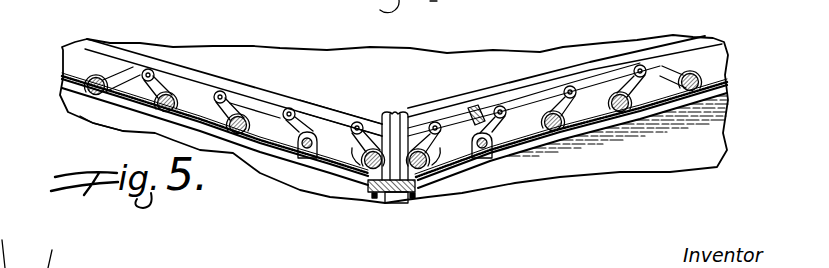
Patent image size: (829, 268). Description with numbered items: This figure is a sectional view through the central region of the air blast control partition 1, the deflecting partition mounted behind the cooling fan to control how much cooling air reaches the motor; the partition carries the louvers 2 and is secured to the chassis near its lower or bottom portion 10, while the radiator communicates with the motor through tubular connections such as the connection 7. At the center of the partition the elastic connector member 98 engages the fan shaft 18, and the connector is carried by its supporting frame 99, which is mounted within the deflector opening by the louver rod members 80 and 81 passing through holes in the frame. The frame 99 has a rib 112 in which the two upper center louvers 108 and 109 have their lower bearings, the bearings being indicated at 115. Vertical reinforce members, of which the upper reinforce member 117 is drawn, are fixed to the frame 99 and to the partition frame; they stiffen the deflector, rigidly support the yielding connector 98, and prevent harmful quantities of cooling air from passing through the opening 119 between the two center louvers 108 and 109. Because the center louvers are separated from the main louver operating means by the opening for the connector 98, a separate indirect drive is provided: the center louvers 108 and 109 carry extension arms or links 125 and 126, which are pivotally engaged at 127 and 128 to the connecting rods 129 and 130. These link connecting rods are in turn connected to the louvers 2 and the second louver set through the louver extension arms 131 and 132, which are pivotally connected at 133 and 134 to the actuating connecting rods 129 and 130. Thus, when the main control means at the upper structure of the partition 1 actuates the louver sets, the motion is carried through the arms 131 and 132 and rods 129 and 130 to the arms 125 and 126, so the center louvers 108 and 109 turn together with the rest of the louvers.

The lower or bottom portion 10 is at (705, 58).
The tubular radiator connection 7 is at (110, 122).
The connecting rod 129 is at (185, 82).
The upper center louver 108 is at (318, 132).
The connecting rod 130 is at (538, 98).
The rib 112 is at (345, 148).
The louvers 2 is at (643, 100).
The partition 1 is at (667, 85).
The louver extension arm 131 is at (127, 78).
The pivotal connection 133 is at (151, 69).
The pivotal connection 134 is at (566, 86).
The louver extension arm 132 is at (575, 108).
The pivotal connection 127 is at (357, 122).
The pivotal connection 128 is at (440, 122).
The bearing 115 is at (375, 148).
The extension arm 125 is at (355, 150).
The extension arm 126 is at (450, 158).
The upper center louver 109 is at (463, 130).
The opening 119 is at (396, 126).
The elastic connector member 98 is at (369, 189).
The fan shaft 18 is at (394, 204).
The upper reinforce member 117 is at (414, 200).
The louver rod member 80 is at (298, 158).
The supporting frame 99 is at (307, 178).
The louver rod member 81 is at (486, 166).